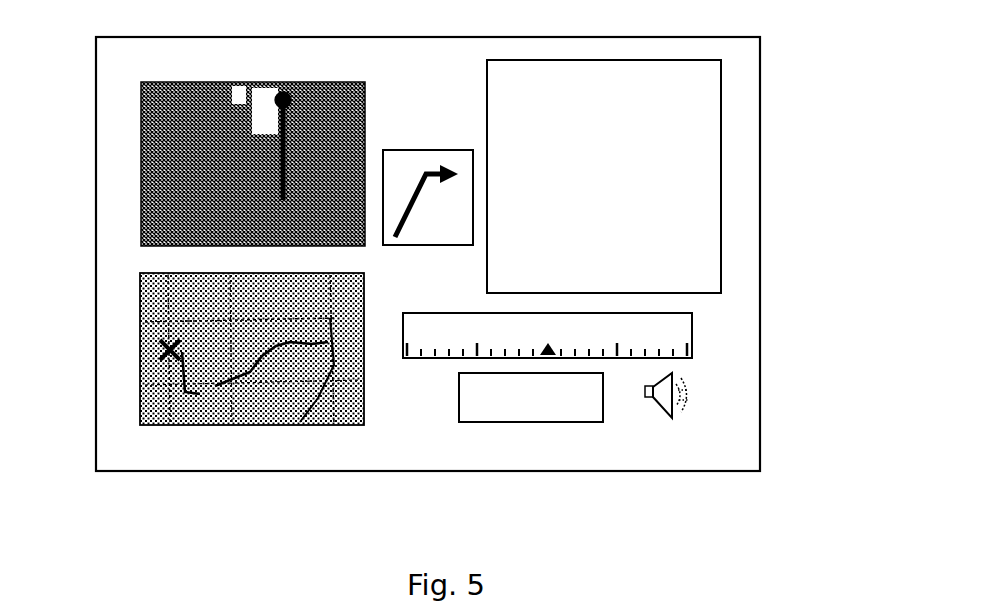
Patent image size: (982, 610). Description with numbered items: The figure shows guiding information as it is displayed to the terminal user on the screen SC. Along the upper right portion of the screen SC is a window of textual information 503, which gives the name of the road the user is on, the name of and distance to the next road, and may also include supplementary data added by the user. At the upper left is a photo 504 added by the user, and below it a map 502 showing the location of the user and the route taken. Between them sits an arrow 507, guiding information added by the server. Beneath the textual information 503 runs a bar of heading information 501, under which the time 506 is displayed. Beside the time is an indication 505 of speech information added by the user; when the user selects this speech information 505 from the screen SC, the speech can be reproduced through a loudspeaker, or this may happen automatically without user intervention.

The screen SC is at (120, 258).
The heading information 501 is at (692, 337).
The map 502 is at (150, 315).
The textual information 503 is at (698, 103).
The photo 504 is at (140, 138).
The speech information indication 505 is at (665, 420).
The time 506 is at (537, 414).
The arrow 507 is at (447, 150).